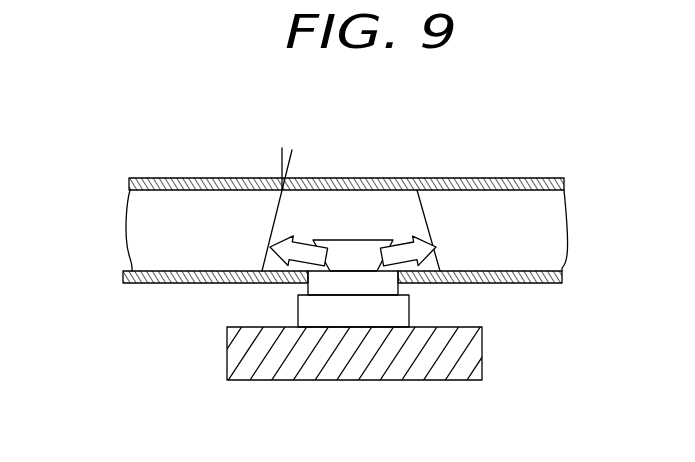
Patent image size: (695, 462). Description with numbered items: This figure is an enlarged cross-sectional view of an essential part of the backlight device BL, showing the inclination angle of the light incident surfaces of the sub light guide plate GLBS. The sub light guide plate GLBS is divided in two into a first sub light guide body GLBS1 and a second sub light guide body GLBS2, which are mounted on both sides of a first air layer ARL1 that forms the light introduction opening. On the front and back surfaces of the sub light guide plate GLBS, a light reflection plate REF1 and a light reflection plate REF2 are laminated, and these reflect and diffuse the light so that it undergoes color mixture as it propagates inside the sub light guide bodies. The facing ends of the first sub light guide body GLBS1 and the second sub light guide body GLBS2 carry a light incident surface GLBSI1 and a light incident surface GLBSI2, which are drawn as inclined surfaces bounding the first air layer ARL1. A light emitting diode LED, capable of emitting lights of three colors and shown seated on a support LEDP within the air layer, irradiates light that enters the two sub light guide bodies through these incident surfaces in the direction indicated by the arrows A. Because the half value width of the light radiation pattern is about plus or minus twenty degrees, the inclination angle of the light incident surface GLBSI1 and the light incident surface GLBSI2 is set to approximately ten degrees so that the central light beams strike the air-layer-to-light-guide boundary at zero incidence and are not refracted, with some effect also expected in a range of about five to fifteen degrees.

The backlight device BL is at (148, 176).
The sub light guide plate GLBS is at (347, 185).
The first sub light guide body GLBS1 is at (134, 245).
The second sub light guide body GLBS2 is at (552, 252).
The light incident surface GLBSI1 is at (277, 218).
The light incident surface GLBSI2 is at (428, 228).
The light reflection plate REF1 is at (547, 178).
The light reflection plate REF2 is at (537, 283).
The first air layer ARL1 is at (405, 207).
The light emitting diode LED is at (353, 242).
The LED substrate LEDP is at (343, 380).
The arrow A is at (296, 281).